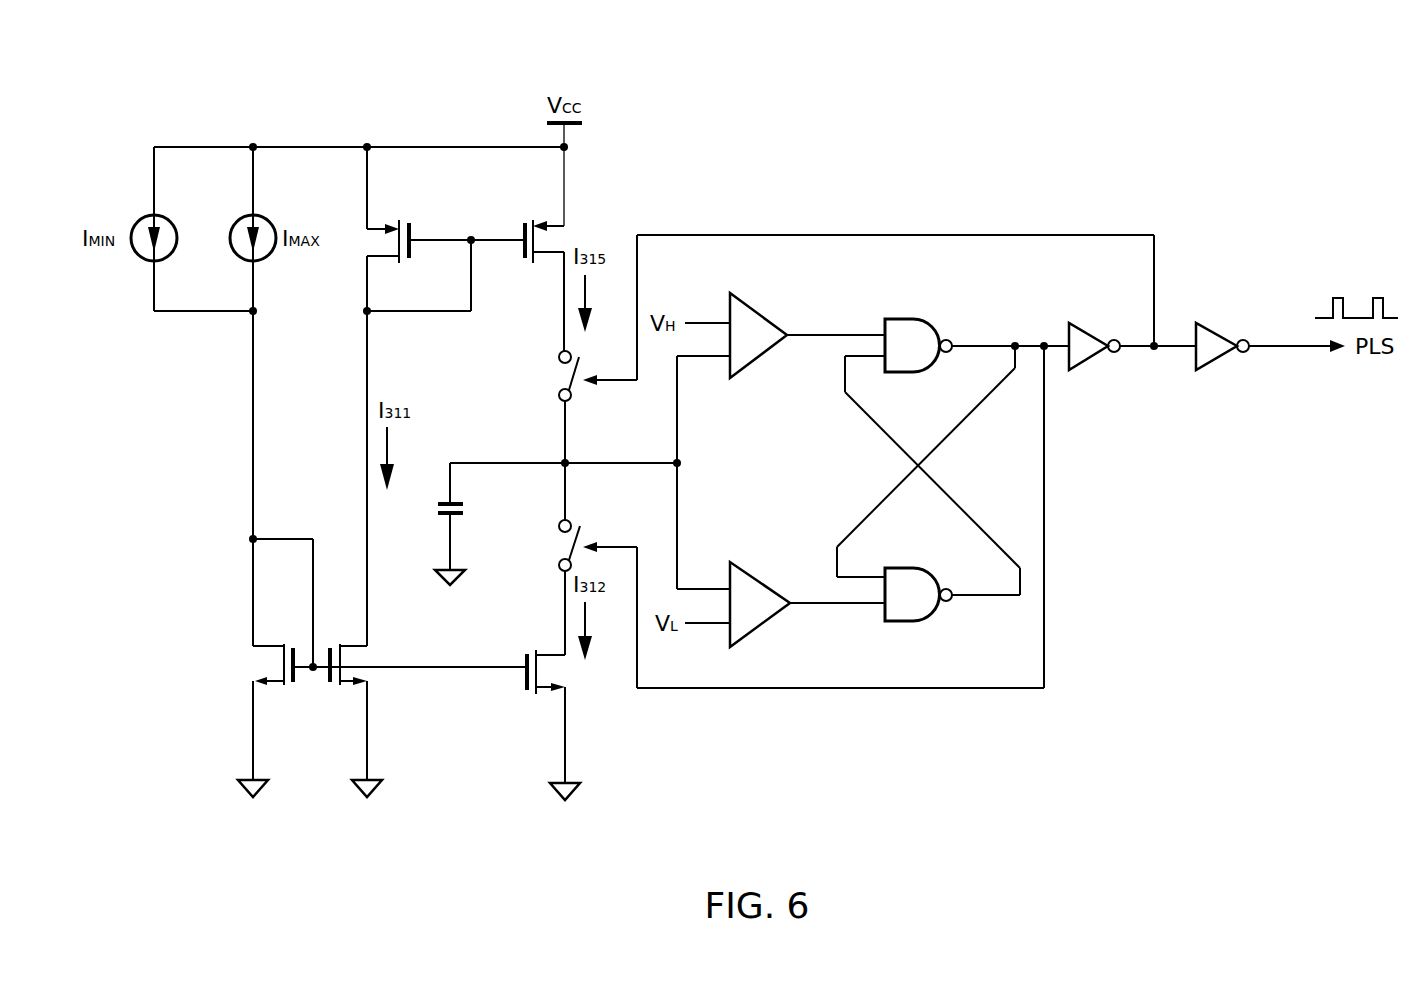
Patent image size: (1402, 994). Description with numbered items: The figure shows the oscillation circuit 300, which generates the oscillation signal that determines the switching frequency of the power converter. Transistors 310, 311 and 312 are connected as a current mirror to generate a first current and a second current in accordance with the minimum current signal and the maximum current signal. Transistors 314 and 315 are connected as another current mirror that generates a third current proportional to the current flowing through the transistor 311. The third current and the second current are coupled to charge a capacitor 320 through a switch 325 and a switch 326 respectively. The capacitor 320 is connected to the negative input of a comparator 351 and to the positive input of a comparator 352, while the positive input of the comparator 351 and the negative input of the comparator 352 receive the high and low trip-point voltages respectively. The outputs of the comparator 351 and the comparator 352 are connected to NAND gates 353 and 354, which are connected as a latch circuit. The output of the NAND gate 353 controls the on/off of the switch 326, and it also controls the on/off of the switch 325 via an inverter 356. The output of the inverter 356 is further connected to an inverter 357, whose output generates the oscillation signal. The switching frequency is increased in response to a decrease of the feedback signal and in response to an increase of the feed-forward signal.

The oscillation circuit 300 is at (1306, 163).
The transistor 310 is at (283, 693).
The transistor 311 is at (339, 693).
The transistor 312 is at (535, 697).
The transistor 314 is at (398, 212).
The transistor 315 is at (534, 268).
The capacitor 320 is at (441, 516).
The switch 325 is at (558, 394).
The switch 326 is at (558, 565).
The comparator 351 is at (748, 364).
The comparator 352 is at (765, 626).
The NAND gate 353 is at (903, 317).
The NAND gate 354 is at (905, 625).
The inverter 356 is at (1085, 368).
The inverter 357 is at (1215, 368).